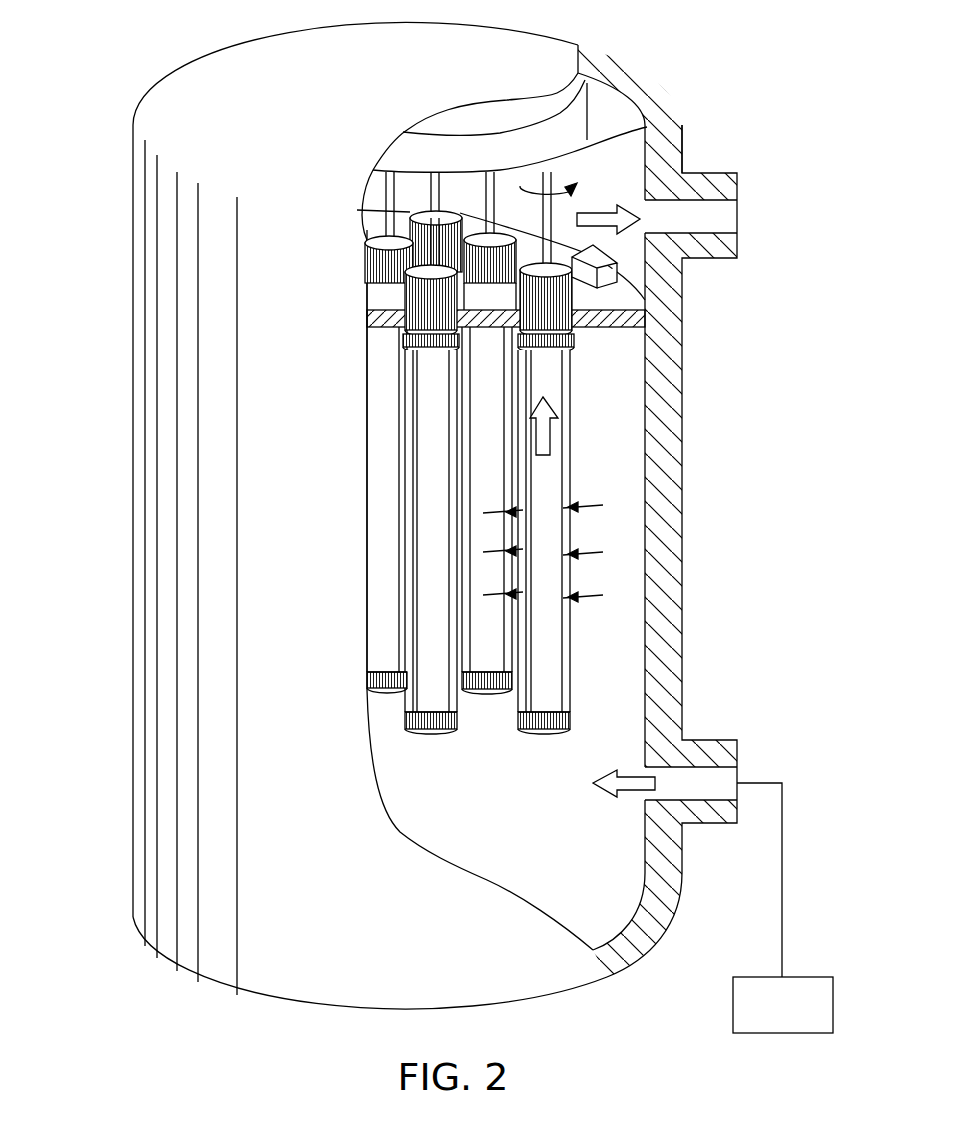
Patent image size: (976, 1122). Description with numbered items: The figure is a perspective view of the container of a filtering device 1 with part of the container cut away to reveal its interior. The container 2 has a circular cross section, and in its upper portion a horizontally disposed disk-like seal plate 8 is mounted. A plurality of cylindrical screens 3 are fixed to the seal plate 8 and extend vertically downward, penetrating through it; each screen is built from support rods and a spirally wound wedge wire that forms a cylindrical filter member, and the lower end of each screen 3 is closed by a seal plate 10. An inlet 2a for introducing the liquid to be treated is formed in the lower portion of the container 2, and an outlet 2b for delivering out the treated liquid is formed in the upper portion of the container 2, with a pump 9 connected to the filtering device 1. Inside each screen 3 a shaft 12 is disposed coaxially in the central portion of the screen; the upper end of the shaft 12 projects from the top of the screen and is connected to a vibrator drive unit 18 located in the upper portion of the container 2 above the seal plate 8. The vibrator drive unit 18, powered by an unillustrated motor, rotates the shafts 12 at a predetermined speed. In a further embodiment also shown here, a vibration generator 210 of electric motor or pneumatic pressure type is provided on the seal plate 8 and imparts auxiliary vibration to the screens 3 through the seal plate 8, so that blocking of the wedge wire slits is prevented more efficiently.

The filtering device 1 is at (202, 392).
The container 2 is at (673, 453).
The inlet 2a is at (707, 788).
The outlet 2b is at (725, 222).
The cylindrical screen 3 is at (565, 427).
The seal plate 8 is at (627, 294).
The pump 9 is at (742, 1023).
The seal plate 10 is at (420, 726).
The shaft 12 is at (683, 118).
The vibrator drive unit 18 is at (582, 78).
The vibration generator 210 is at (618, 268).